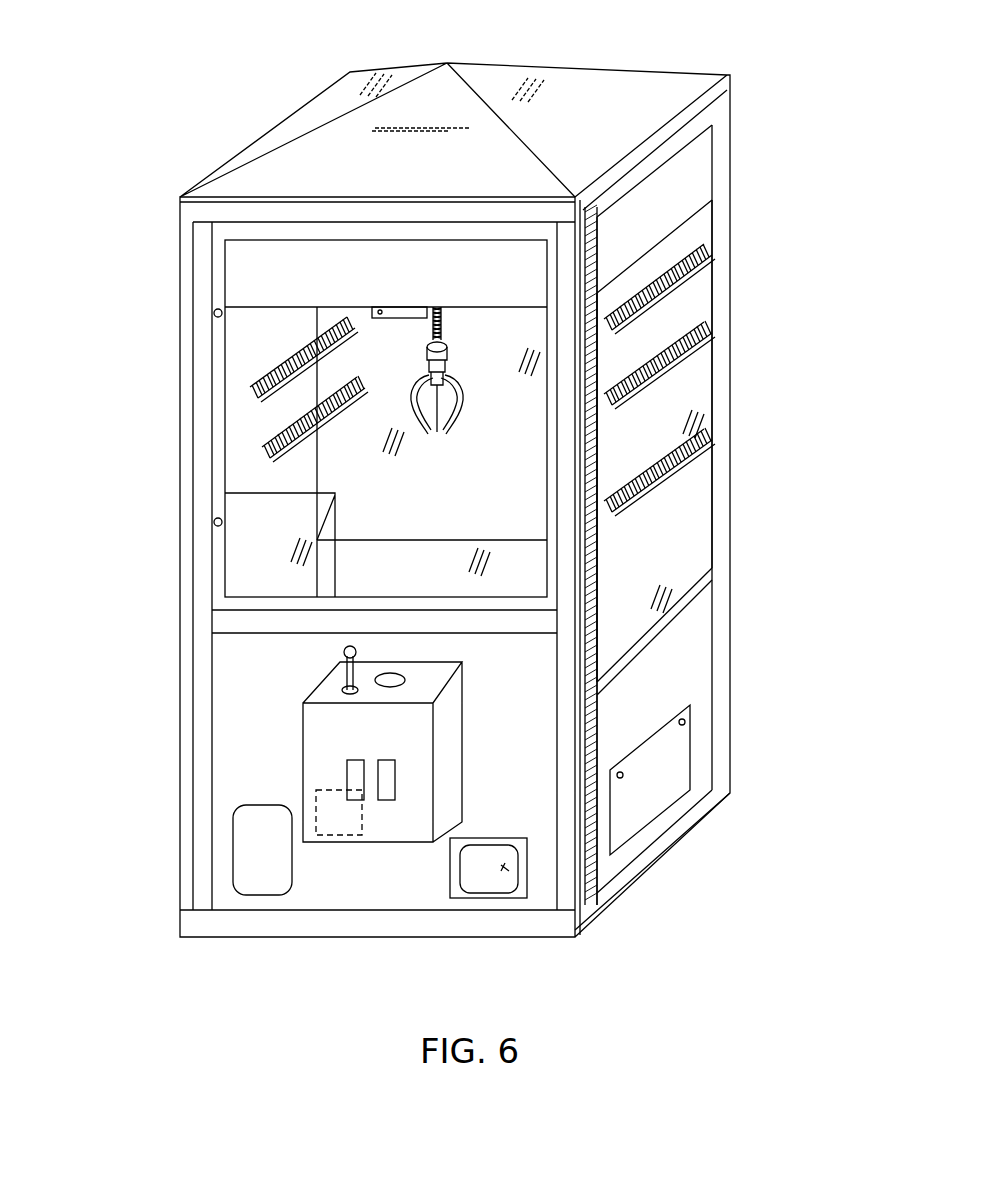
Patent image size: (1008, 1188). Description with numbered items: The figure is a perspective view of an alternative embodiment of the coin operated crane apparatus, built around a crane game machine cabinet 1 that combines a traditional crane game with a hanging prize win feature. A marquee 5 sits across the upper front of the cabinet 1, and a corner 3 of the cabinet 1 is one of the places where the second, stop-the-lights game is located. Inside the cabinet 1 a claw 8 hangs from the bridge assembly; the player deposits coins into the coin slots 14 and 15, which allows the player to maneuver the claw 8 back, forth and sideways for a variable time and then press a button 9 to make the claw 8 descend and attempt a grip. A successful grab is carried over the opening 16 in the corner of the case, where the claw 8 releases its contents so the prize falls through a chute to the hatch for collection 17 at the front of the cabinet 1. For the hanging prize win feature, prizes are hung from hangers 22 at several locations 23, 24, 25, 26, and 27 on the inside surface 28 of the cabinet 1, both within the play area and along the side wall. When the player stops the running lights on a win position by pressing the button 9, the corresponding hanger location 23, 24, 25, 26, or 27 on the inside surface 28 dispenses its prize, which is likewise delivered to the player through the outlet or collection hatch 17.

The cabinet 1 is at (305, 100).
The corner 3 is at (597, 217).
The marquee 5 is at (250, 280).
The claw 8 is at (462, 365).
The button 9 is at (400, 688).
The coin slot 14 is at (352, 805).
The coin slot 15 is at (385, 805).
The opening 16 is at (248, 572).
The prize door 17 is at (250, 870).
The hanger 22 is at (693, 372).
The hanger location 23 is at (262, 452).
The hanger location 24 is at (270, 378).
The hanger location 25 is at (700, 278).
The hanger location 26 is at (700, 352).
The hanger location 27 is at (680, 488).
The inside surface 28 is at (252, 420).